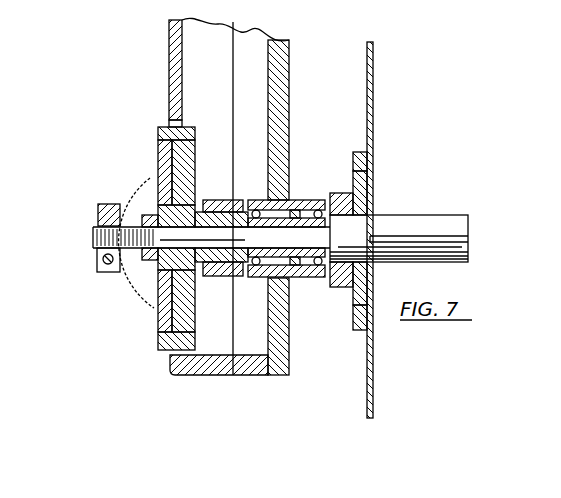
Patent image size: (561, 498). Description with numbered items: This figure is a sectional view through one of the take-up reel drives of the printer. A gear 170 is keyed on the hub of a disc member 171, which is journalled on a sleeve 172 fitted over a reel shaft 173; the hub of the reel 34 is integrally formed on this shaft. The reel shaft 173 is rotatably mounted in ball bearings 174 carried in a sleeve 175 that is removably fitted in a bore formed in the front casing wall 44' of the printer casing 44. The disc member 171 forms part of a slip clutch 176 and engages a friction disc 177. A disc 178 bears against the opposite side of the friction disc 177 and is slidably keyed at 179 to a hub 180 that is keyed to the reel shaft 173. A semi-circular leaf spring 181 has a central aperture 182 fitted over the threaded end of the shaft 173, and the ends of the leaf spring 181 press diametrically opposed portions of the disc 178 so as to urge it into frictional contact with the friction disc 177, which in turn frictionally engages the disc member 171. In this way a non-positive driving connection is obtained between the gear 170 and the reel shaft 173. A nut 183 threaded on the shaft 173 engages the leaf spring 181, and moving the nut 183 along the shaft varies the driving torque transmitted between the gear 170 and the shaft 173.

The reel 34 is at (372, 200).
The printer casing 44 is at (229, 191).
The front casing wall 44' is at (245, 207).
The gear 170 is at (215, 198).
The disc member 171 is at (232, 159).
The sleeve 172 is at (213, 233).
The reel shaft 173 is at (98, 239).
The ball bearings 174 is at (278, 208).
The sleeve 175 is at (289, 283).
The slip clutch 176 is at (152, 323).
The friction disc 177 is at (194, 308).
The disc 178 is at (160, 313).
The slidable keying 179 is at (153, 205).
The hub 180 is at (156, 262).
The leaf spring 181 is at (150, 283).
The aperture 182 is at (112, 224).
The nut 183 is at (105, 206).